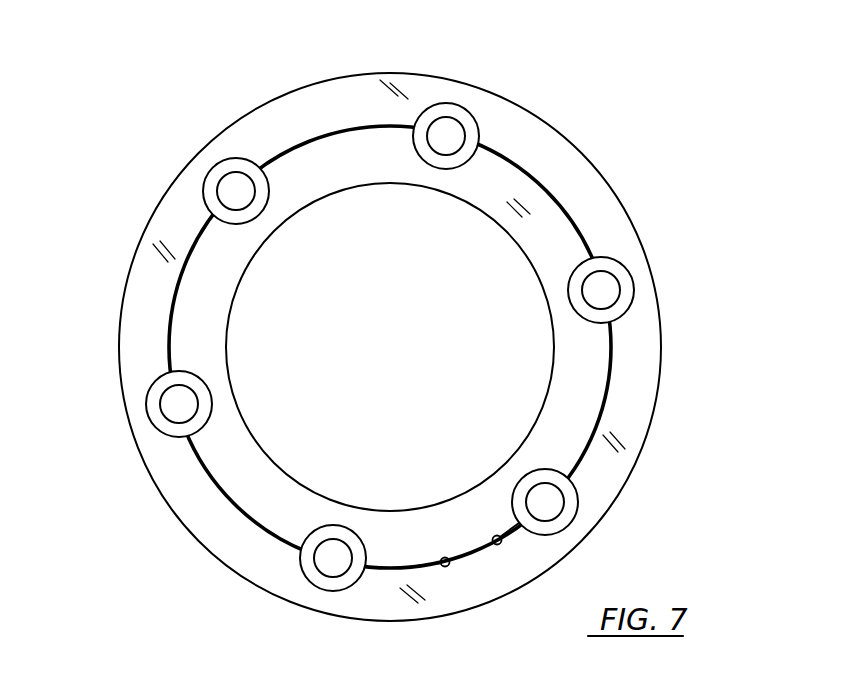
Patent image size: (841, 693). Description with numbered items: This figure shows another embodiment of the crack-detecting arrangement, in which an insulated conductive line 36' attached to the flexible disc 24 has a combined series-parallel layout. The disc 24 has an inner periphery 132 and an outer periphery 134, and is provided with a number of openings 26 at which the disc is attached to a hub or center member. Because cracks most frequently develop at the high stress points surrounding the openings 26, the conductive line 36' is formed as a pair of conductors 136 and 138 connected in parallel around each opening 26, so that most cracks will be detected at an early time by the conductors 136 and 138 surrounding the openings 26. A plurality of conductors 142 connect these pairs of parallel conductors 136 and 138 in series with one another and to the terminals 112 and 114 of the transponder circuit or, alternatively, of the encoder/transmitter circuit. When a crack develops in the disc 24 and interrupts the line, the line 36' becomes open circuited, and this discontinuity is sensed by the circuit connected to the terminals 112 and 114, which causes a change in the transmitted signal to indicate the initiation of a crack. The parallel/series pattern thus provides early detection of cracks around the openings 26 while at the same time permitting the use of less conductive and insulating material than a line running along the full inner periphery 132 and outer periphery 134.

The disc 24 is at (574, 141).
The openings 26 is at (228, 178).
The insulated conductive line 36' is at (203, 563).
The terminal 112 is at (495, 535).
The terminal 114 is at (449, 565).
The inner periphery 132 is at (266, 240).
The outer periphery 134 is at (120, 332).
The conductor 136 is at (446, 169).
The conductor 138 is at (468, 112).
The conductors 142 is at (572, 219).